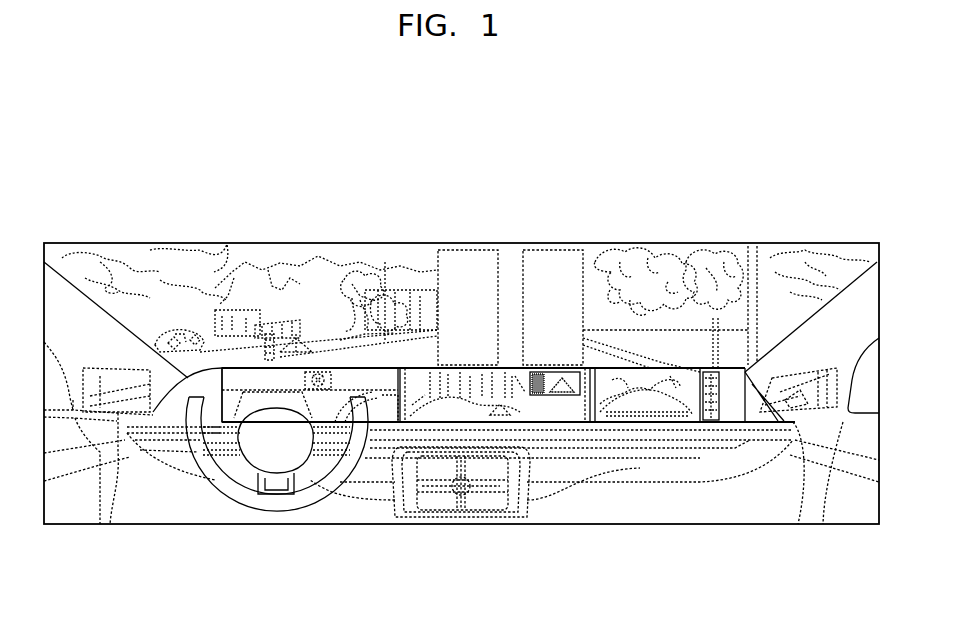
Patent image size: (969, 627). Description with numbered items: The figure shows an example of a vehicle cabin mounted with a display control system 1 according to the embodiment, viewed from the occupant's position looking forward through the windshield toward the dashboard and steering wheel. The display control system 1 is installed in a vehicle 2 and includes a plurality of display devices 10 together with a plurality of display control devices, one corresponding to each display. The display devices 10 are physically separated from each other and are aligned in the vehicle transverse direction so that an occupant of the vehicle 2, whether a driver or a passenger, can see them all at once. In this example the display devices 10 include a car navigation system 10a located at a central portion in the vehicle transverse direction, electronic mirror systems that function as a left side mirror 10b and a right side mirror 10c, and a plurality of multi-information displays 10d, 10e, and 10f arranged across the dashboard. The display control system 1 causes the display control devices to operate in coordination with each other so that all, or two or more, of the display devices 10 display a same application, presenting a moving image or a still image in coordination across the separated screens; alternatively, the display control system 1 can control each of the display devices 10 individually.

The display control system 1 is at (838, 196).
The vehicle 2 is at (732, 514).
The display devices 10 is at (467, 475).
The car navigation system 10a is at (458, 440).
The left side mirror 10b is at (120, 408).
The right side mirror 10c is at (810, 400).
The multi-information display 10d is at (345, 424).
The multi-information display 10e is at (548, 396).
The multi-information display 10f is at (650, 400).